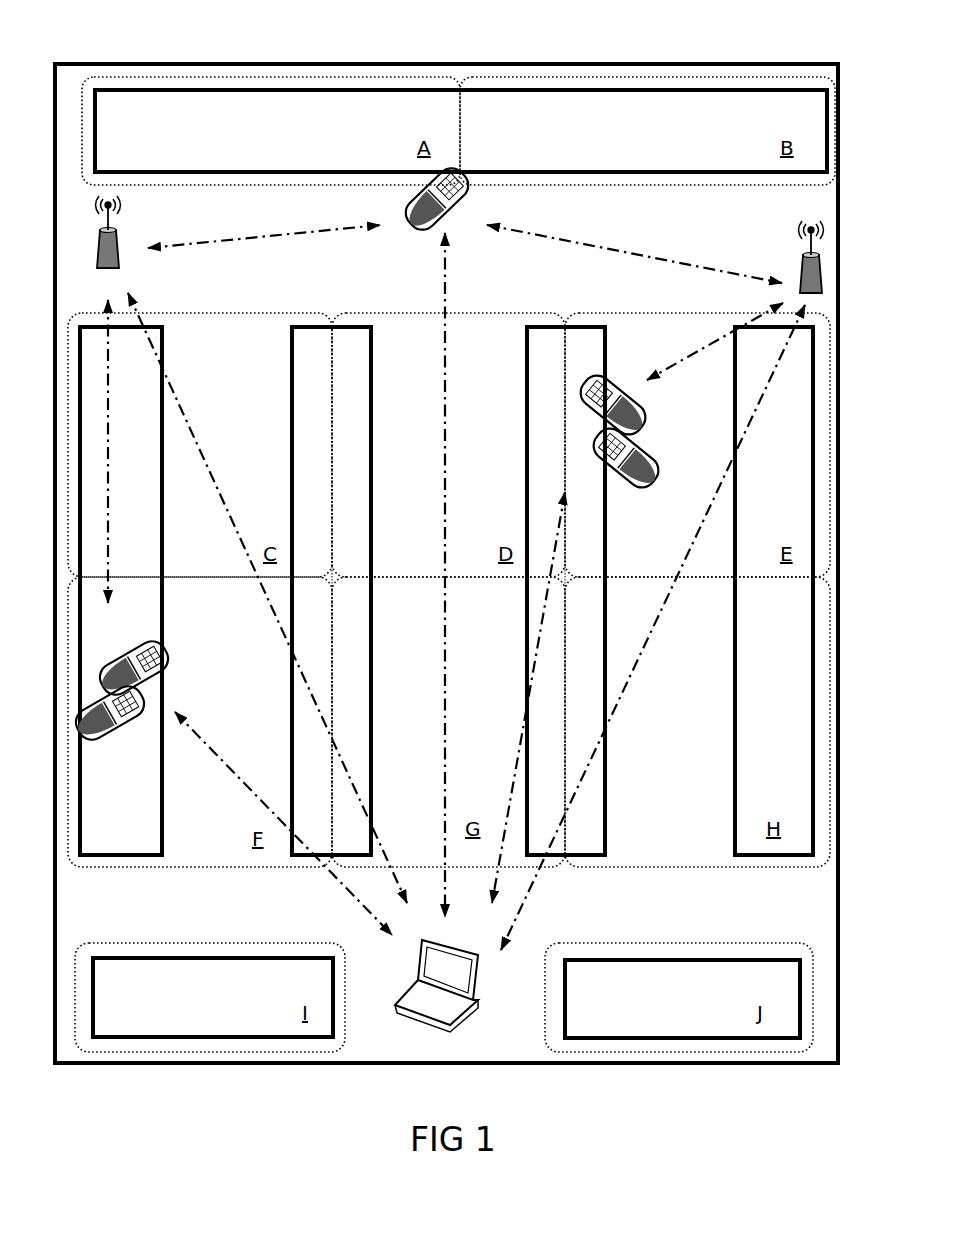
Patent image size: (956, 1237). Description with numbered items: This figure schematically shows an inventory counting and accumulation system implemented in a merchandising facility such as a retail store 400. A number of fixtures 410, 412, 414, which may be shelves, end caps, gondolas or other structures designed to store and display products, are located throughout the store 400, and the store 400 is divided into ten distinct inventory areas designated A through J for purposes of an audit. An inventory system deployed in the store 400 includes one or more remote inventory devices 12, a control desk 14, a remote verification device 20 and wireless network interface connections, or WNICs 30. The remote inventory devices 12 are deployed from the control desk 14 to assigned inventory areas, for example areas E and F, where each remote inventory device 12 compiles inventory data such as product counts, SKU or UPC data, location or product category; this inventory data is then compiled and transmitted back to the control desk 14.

The retail store 400 is at (222, 47).
The fixture 410 is at (588, 112).
The fixture 412 is at (318, 830).
The fixture 414 is at (240, 1010).
The wireless network interface connection 30 is at (135, 262).
The remote verification device 20 is at (415, 243).
The remote inventory device 12 is at (620, 490).
The control desk 14 is at (450, 1040).